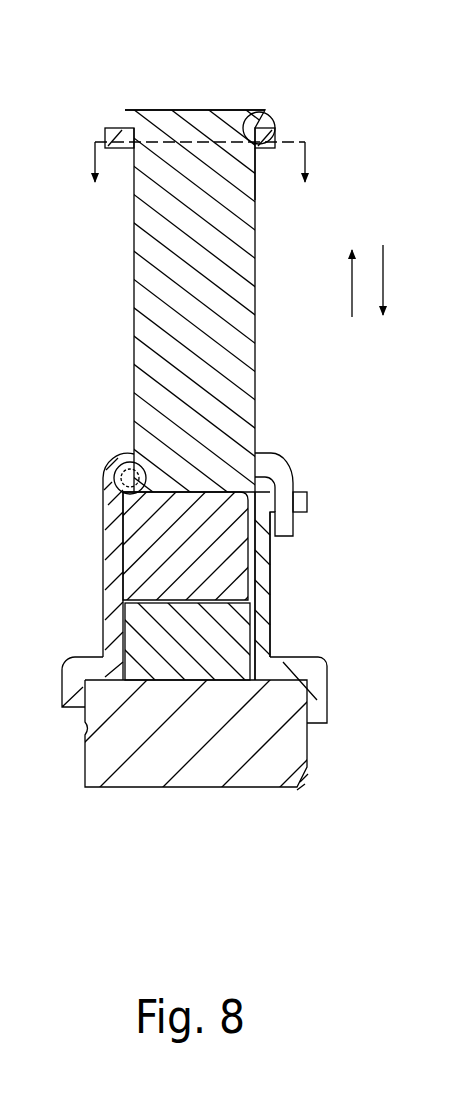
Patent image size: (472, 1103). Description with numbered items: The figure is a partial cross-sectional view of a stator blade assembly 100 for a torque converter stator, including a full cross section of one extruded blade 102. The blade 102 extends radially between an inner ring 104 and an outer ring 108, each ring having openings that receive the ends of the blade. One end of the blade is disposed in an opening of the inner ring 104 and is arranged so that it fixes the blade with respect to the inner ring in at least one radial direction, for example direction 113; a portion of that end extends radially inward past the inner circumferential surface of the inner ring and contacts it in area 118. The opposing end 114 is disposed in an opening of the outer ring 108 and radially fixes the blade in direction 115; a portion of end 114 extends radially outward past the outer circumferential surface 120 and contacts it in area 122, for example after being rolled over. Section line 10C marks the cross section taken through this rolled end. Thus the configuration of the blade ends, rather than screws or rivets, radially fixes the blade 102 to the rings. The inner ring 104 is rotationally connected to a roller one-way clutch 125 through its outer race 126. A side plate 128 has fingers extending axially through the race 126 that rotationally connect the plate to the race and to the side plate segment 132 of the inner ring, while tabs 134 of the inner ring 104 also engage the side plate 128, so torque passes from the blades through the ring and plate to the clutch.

The stator blade assembly 100 is at (280, 78).
The blade 102 is at (133, 295).
The inner ring 104 is at (283, 452).
The outer ring 108 is at (278, 152).
The section line 10C is at (210, 179).
The radial direction 113 is at (352, 290).
The opposing end 114 is at (175, 110).
The radial direction 115 is at (383, 268).
The contact area 118 is at (125, 472).
The outer circumferential surface 120 is at (118, 128).
The contact area 122 is at (268, 113).
The one-way clutch 125 is at (85, 570).
The outer race 126 is at (148, 535).
The side plate 128 is at (273, 607).
The side plate segment 132 is at (116, 617).
The tabs 134 is at (285, 527).